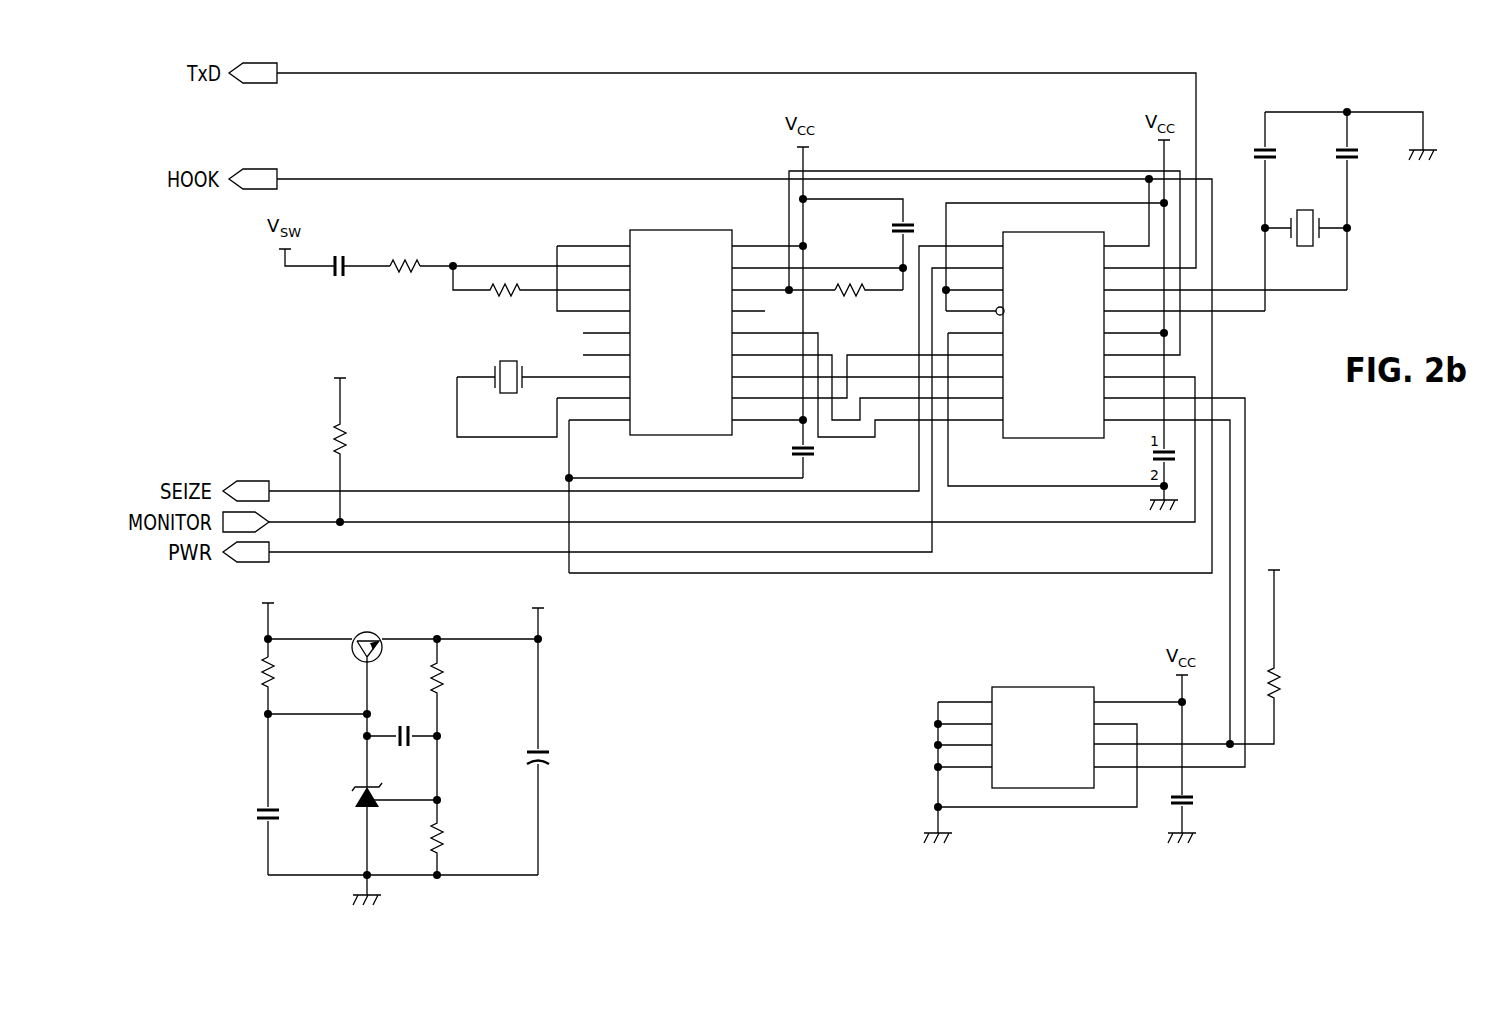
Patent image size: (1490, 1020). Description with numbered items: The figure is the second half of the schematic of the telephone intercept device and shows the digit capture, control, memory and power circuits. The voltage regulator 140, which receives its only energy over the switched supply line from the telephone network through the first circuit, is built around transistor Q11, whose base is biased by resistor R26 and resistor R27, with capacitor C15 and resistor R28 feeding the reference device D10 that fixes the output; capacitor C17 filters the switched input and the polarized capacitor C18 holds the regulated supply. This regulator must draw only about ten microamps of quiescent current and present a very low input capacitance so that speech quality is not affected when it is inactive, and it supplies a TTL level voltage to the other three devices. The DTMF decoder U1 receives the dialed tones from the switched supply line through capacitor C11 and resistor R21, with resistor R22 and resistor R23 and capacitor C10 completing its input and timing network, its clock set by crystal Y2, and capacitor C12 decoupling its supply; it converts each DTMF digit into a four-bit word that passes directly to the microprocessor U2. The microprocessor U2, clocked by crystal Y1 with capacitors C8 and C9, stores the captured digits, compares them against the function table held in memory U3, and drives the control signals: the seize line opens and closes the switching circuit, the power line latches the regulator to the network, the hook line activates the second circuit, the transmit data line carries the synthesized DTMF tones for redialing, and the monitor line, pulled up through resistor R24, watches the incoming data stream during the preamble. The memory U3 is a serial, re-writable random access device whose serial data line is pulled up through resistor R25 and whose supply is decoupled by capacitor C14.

The voltage regulator 140 is at (578, 679).
The DTMF decoder U1 is at (762, 323).
The microprocessor U2 is at (1146, 488).
The memory U3 is at (1060, 736).
The resistor R21 is at (502, 248).
The resistor R22 is at (541, 294).
The resistor R23 is at (862, 296).
The resistor R24 is at (353, 438).
The resistor R25 is at (1277, 642).
The resistor R26 is at (283, 725).
The resistor R27 is at (459, 719).
The resistor R28 is at (459, 837).
The capacitor C8 is at (1252, 211).
The capacitor C9 is at (1333, 201).
The capacitor C10 is at (858, 244).
The capacitor C11 is at (356, 275).
The capacitor C12 is at (782, 453).
The capacitor C14 is at (1202, 811).
The capacitor C15 is at (402, 723).
The capacitor C17 is at (248, 833).
The capacitor C18 is at (557, 804).
The crystal Y1 is at (1306, 217).
The crystal Y2 is at (507, 387).
The transistor Q11 is at (367, 641).
The zener diode D10 is at (354, 822).